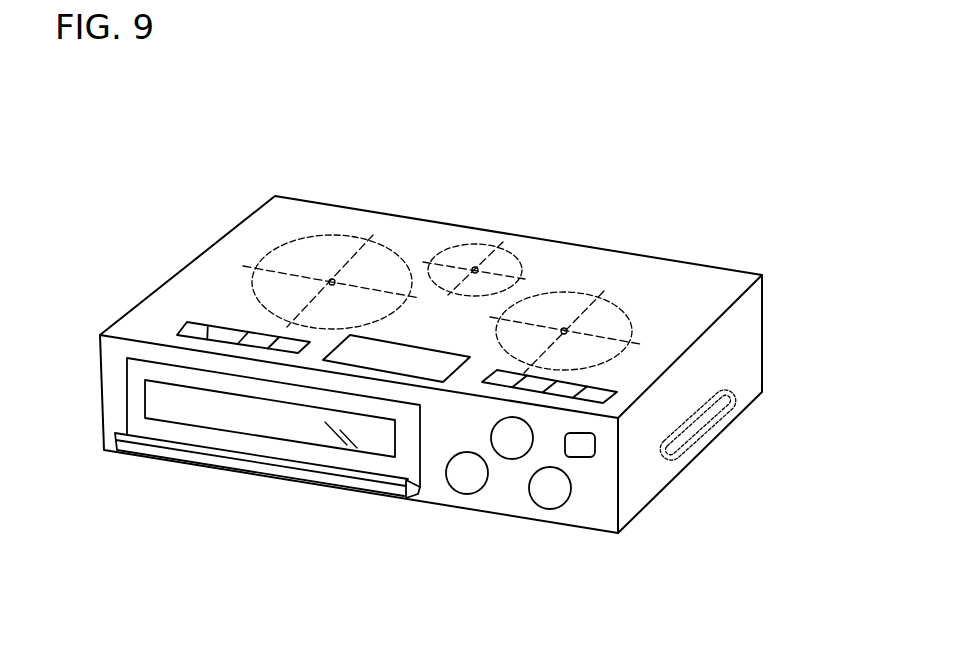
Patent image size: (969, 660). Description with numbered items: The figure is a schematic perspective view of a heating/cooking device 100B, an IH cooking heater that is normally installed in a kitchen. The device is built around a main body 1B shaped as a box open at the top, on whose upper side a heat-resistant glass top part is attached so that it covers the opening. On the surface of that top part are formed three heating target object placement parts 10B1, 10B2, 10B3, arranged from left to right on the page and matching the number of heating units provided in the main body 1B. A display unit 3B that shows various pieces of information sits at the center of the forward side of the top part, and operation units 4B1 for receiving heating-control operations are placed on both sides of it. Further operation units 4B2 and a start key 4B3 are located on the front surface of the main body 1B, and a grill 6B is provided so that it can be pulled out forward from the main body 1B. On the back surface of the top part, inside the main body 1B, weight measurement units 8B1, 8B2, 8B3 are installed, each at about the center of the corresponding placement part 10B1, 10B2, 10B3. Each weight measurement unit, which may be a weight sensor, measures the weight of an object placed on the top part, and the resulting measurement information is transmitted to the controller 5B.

The heating/cooking device 100B is at (193, 199).
The main body 1B is at (737, 362).
The display unit 3B is at (378, 355).
The operation units 4B1 is at (633, 427).
The operation units 4B2 is at (512, 459).
The start key 4B3 is at (585, 457).
The controller 5B is at (733, 410).
The grill 6B is at (255, 445).
The weight measurement unit 8B1 is at (332, 282).
The weight measurement unit 8B2 is at (475, 270).
The weight measurement unit 8B3 is at (565, 331).
The heating target object placement part 10B1 is at (317, 250).
The heating target object placement part 10B2 is at (470, 253).
The heating target object placement part 10B3 is at (608, 307).